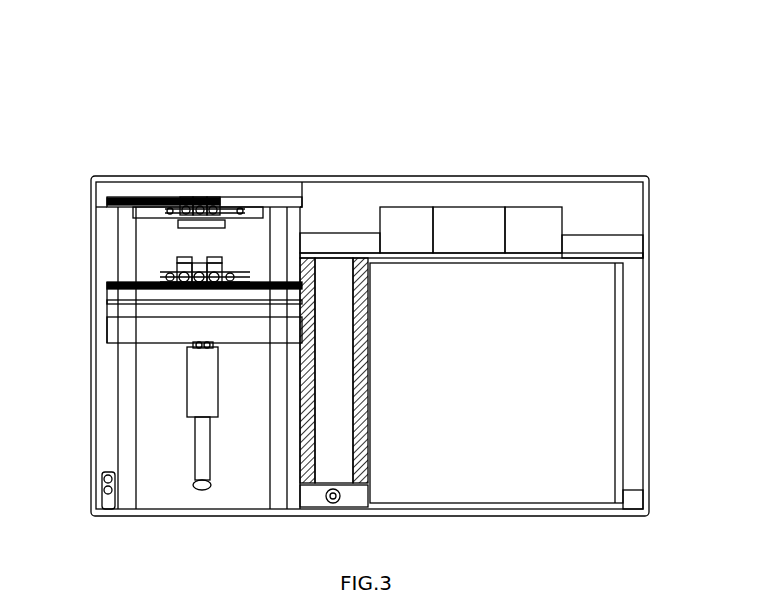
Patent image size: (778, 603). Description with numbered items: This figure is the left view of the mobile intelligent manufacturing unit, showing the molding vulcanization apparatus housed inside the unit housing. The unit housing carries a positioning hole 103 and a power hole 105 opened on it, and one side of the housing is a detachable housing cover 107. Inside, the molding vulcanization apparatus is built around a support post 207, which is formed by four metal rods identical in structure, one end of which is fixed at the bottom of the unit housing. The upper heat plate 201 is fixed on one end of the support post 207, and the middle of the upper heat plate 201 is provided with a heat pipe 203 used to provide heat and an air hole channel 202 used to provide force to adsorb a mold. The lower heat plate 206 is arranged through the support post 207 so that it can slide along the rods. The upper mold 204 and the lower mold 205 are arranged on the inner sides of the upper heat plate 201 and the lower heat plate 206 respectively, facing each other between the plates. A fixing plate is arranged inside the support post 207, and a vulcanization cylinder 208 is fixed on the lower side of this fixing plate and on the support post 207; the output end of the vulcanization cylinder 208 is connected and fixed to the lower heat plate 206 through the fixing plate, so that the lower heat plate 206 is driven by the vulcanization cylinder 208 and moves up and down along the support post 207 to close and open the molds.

The positioning hole 103 is at (681, 519).
The power hole 105 is at (65, 475).
The detachable housing cover 107 is at (213, 120).
The upper heat plate 201 is at (120, 117).
The air hole channel 202 is at (132, 127).
The heat pipe 203 is at (122, 145).
The upper mold 204 is at (121, 186).
The lower mold 205 is at (135, 195).
The lower heat plate 206 is at (161, 238).
The support post 207 is at (161, 288).
The vulcanization cylinder 208 is at (119, 383).